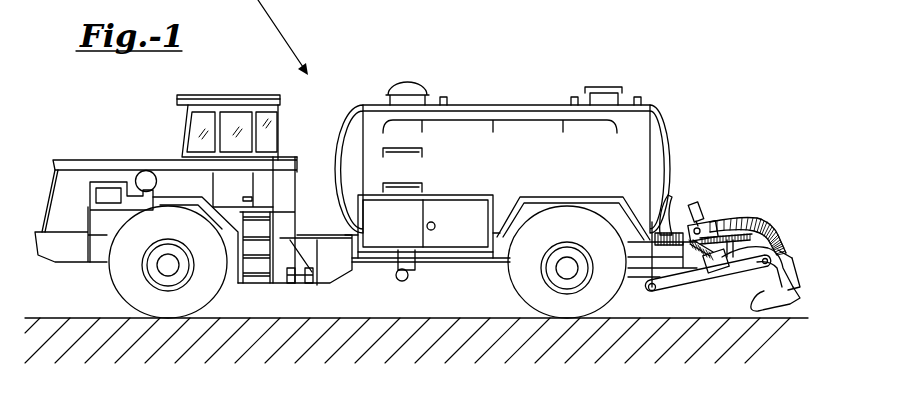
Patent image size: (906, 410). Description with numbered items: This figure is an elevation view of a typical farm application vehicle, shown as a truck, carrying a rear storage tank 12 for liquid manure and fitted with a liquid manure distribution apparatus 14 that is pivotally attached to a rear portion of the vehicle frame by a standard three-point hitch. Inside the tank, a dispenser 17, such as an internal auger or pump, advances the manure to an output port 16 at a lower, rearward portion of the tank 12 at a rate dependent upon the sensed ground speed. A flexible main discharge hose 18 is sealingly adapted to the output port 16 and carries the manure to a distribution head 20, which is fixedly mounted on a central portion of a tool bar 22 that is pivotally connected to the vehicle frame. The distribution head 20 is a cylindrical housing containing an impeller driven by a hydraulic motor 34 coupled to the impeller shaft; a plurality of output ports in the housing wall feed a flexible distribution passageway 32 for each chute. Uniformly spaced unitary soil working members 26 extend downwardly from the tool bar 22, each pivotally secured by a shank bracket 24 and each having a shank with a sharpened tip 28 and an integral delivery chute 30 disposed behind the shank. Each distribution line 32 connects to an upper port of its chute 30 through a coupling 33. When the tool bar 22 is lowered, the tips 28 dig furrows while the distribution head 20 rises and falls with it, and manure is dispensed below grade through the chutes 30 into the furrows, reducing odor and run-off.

The rear storage tank 12 is at (468, 104).
The liquid manure distribution apparatus 14 is at (753, 206).
The output port 16 is at (671, 198).
The dispenser 17 is at (663, 216).
The flexible main discharge hose 18 is at (683, 222).
The distribution head 20 is at (705, 224).
The tool bar 22 is at (707, 288).
The shank bracket 24 is at (750, 265).
The soil working member 26 is at (798, 247).
The sharpened tip 28 is at (786, 306).
The delivery chute 30 is at (794, 270).
The flexible distribution passageway 32 is at (755, 214).
The coupling 33 is at (790, 250).
The hydraulic motor 34 is at (697, 202).